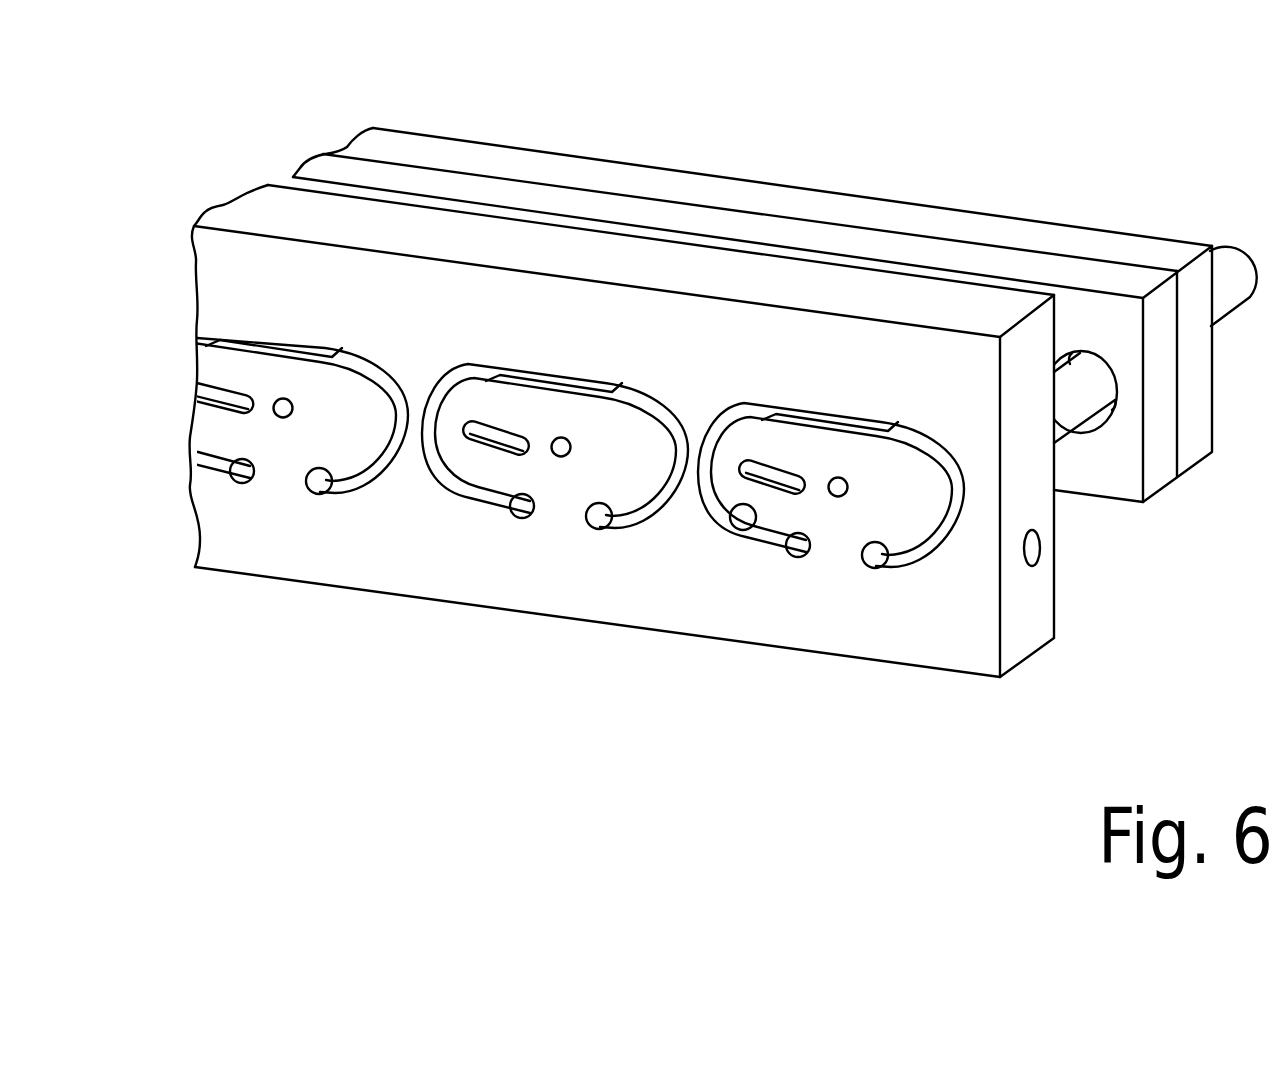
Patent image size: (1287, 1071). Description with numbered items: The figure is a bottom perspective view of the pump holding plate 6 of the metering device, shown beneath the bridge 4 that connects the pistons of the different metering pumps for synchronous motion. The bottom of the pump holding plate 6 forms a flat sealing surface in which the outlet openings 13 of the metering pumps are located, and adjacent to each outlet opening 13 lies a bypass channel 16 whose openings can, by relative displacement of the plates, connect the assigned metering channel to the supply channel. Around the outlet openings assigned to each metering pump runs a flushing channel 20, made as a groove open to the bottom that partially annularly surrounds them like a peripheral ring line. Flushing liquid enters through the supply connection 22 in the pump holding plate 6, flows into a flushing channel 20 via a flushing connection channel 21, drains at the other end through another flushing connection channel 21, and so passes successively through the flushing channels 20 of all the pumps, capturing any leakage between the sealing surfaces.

The bridge 4 is at (864, 212).
The pump holding plate 6 is at (1034, 603).
The outlet opening 13 is at (838, 490).
The bypass channel 16 is at (487, 449).
The flushing channel 20 is at (497, 503).
The flushing connection channel 21 is at (598, 517).
The supply connection 22 is at (1040, 545).